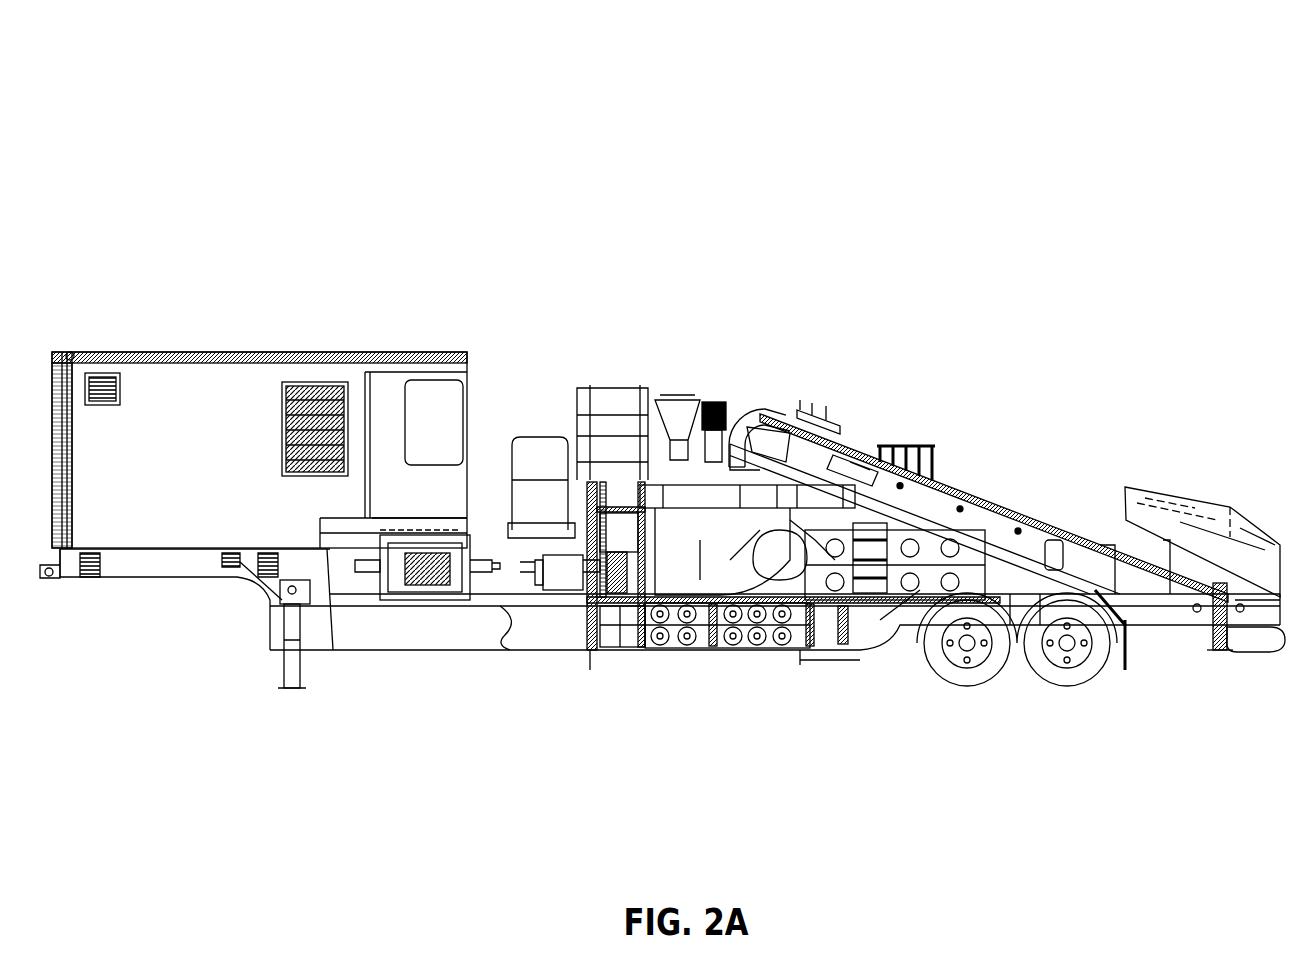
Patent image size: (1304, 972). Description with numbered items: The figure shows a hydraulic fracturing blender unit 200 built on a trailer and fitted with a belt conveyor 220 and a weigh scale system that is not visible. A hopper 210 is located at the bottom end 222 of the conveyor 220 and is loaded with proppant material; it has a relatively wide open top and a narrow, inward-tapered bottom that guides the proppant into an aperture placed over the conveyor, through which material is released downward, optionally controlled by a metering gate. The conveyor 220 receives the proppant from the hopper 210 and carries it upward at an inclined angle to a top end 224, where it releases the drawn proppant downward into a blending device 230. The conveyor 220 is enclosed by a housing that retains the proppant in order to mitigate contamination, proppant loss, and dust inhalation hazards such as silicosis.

The hydraulic fracturing blender unit 200 is at (662, 412).
The hopper 210 is at (1205, 501).
The belt conveyor 220 is at (950, 486).
The bottom end 222 is at (1216, 540).
The top end 224 is at (762, 405).
The blending device 230 is at (688, 640).